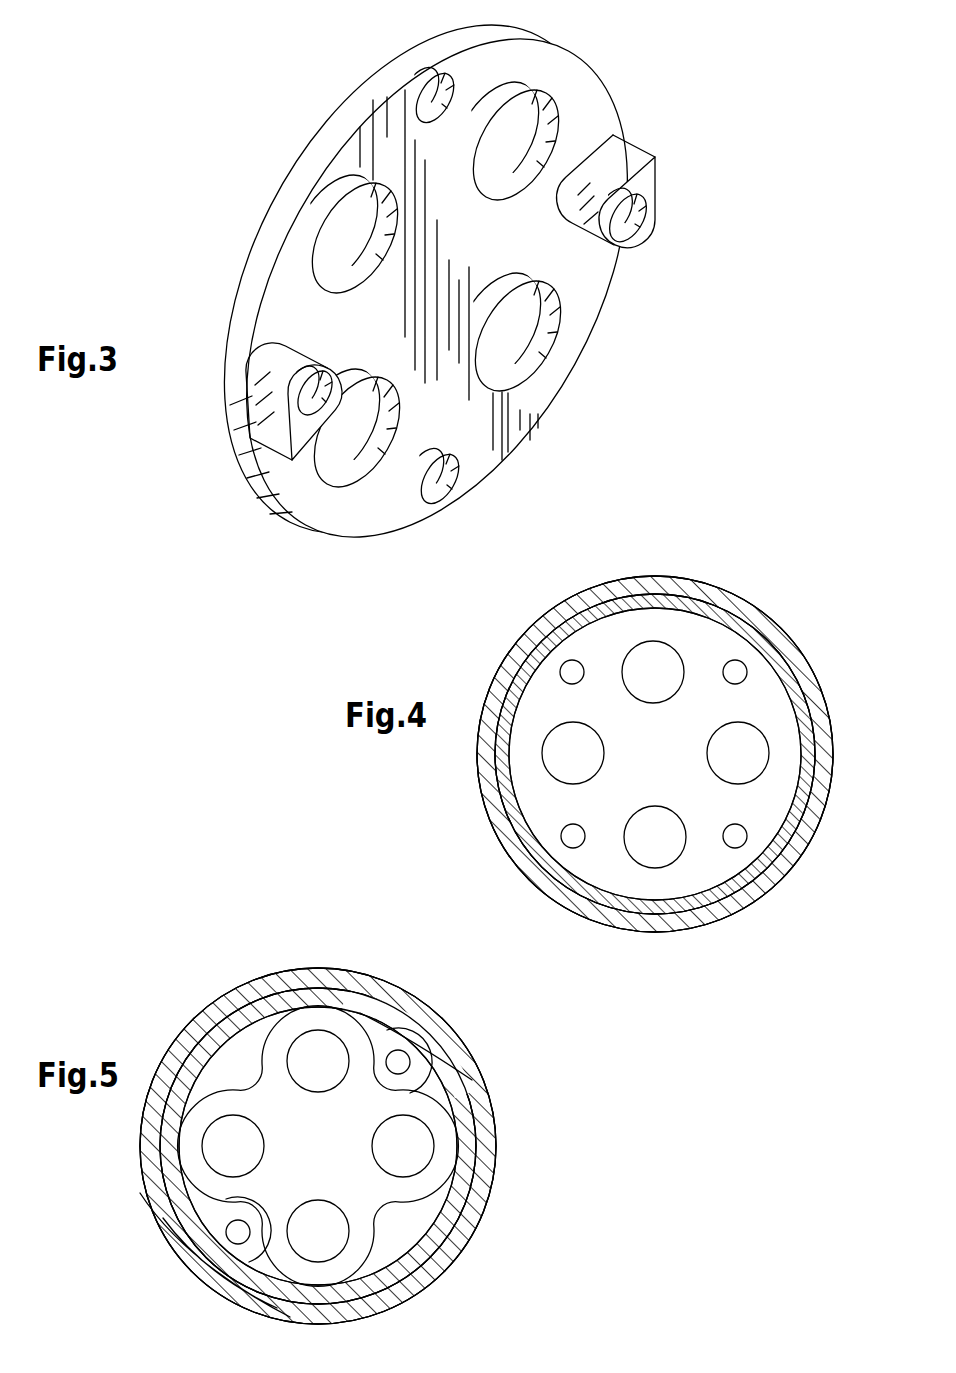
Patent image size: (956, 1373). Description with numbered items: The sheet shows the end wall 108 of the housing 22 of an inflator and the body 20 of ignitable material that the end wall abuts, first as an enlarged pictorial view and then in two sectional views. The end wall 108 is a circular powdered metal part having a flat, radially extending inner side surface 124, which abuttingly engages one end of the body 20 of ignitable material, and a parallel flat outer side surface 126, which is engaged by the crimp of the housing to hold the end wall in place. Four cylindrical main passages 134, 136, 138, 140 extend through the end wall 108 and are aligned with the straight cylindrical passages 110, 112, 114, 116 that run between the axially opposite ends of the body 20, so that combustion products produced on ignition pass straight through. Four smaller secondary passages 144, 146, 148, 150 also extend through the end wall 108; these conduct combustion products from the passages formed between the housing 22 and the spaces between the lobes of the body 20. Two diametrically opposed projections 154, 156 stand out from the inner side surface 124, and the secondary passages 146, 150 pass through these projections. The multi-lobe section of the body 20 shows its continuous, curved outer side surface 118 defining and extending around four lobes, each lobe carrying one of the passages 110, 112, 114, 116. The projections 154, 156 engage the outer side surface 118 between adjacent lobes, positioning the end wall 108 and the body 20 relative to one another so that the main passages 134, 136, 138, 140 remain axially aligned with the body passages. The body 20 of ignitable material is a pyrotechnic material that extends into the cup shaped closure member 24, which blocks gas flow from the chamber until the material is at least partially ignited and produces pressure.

In FIG. 5, the body of ignitable material 20 is at (288, 1273).
In FIG. 4, the housing 22 is at (497, 777).
In FIG. 5, the housing 22 is at (153, 1192).
In FIG. 4, the cup shaped closure member 24 is at (627, 577).
In FIG. 5, the cup shaped closure member 24 is at (371, 971).
In FIG. 3, the end wall 108 is at (318, 128).
In FIG. 4, the end wall 108 is at (708, 641).
In FIG. 5, the passage 110 is at (317, 1063).
In FIG. 5, the passage 112 is at (402, 1148).
In FIG. 5, the passage 114 is at (320, 1235).
In FIG. 5, the passage 116 is at (234, 1148).
In FIG. 5, the outer side surface 118 is at (448, 1204).
In FIG. 3, the inner side surface 124 is at (382, 498).
In FIG. 3, the outer side surface 126 is at (275, 190).
In FIG. 4, the outer side surface 126 is at (802, 793).
In FIG. 3, the main passage 134 is at (512, 133).
In FIG. 4, the main passage 134 is at (653, 670).
In FIG. 3, the main passage 136 is at (517, 332).
In FIG. 4, the main passage 136 is at (740, 752).
In FIG. 3, the main passage 138 is at (353, 432).
In FIG. 4, the main passage 138 is at (655, 840).
In FIG. 3, the main passage 140 is at (350, 233).
In FIG. 4, the main passage 140 is at (573, 753).
In FIG. 3, the secondary passage 144 is at (433, 92).
In FIG. 4, the secondary passage 144 is at (572, 672).
In FIG. 3, the secondary passage 146 is at (640, 222).
In FIG. 4, the secondary passage 146 is at (735, 672).
In FIG. 5, the secondary passage 146 is at (398, 1062).
In FIG. 3, the secondary passage 148 is at (458, 500).
In FIG. 4, the secondary passage 148 is at (737, 838).
In FIG. 3, the secondary passage 150 is at (315, 400).
In FIG. 4, the secondary passage 150 is at (573, 836).
In FIG. 5, the secondary passage 150 is at (238, 1232).
In FIG. 3, the projection 154 is at (630, 152).
In FIG. 5, the projection 154 is at (390, 1040).
In FIG. 3, the projection 156 is at (245, 348).
In FIG. 5, the projection 156 is at (230, 1203).